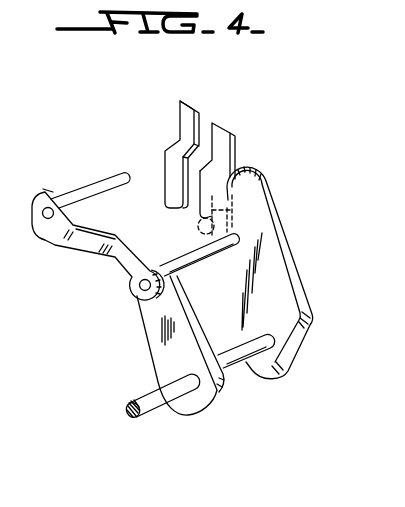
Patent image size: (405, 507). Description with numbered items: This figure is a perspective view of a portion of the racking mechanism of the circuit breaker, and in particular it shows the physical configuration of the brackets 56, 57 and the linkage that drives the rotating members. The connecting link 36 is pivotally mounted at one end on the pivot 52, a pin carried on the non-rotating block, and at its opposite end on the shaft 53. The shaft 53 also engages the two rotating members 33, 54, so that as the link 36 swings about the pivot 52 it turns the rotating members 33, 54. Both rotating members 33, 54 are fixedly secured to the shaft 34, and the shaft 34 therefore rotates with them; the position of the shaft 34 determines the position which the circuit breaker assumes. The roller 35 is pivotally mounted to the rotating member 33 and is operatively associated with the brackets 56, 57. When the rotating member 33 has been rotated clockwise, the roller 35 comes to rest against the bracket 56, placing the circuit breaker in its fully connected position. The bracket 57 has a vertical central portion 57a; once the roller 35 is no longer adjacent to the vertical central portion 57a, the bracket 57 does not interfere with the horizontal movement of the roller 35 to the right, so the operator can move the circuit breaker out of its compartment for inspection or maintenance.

The rotating member 33 is at (298, 258).
The shaft 34 is at (157, 412).
The roller 35 is at (178, 229).
The connecting link 36 is at (85, 250).
The pivot 52 is at (45, 218).
The shaft 53 is at (212, 260).
The rotating member 54 is at (142, 330).
The bracket 56 is at (197, 110).
The bracket 57 is at (224, 132).
The vertical central portion 57a is at (195, 187).